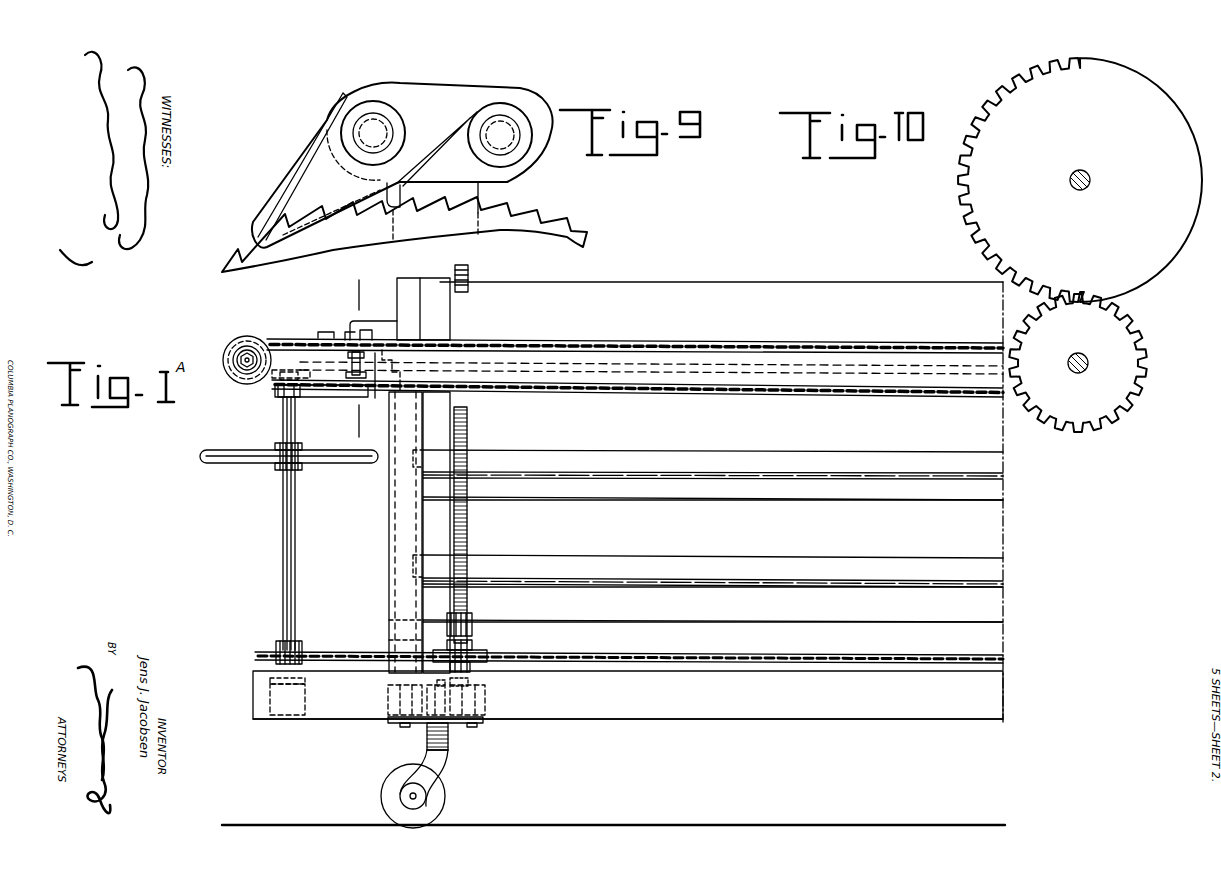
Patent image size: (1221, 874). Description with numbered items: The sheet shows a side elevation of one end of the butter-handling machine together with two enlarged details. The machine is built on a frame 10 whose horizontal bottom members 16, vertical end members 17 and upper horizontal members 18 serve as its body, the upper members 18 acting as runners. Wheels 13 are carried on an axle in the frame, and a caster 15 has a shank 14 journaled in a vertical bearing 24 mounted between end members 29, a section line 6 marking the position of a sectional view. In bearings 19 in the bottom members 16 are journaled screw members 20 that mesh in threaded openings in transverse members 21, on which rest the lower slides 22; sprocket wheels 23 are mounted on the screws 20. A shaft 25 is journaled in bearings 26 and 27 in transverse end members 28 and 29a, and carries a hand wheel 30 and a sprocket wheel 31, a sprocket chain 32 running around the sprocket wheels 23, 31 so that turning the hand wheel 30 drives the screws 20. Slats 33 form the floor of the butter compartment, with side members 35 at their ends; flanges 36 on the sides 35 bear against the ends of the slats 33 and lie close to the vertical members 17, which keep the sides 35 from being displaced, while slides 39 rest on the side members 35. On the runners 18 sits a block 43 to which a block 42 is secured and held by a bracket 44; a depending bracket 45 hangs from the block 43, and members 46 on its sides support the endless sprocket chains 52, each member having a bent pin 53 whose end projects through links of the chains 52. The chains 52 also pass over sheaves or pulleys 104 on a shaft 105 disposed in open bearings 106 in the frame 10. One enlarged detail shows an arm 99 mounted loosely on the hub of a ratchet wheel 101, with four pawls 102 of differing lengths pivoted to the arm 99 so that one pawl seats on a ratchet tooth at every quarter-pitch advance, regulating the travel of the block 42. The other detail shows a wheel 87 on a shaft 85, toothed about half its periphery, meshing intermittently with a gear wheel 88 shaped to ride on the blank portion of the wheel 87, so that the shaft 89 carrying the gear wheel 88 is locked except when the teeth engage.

In FIG. 1A, the section line 6— 6 is at (364, 359).
In FIG. 1A, the frame 10 is at (628, 733).
In FIG. 1A, the wheels 13 is at (649, 361).
In FIG. 1A, the shank 14 is at (440, 758).
In FIG. 1A, the caster 15 is at (428, 800).
In FIG. 1A, the horizontal bottom members 16 is at (628, 695).
In FIG. 1A, the vertical end members 17 is at (389, 540).
In FIG. 1A, the upper horizontal members 18 is at (291, 375).
In FIG. 1A, the bearings 19 is at (470, 686).
In FIG. 1A, the screw members 20 is at (463, 594).
In FIG. 1A, the transverse members 21 is at (470, 628).
In FIG. 1A, the lower slides 22 is at (713, 608).
In FIG. 1A, the sprocket wheels 23 is at (482, 653).
In FIG. 1A, the vertical bearing 24 is at (460, 727).
In FIG. 1A, the shaft 25 is at (293, 540).
In FIG. 1A, the bearing 26 is at (278, 395).
In FIG. 1A, the bearing 27 is at (270, 683).
In FIG. 1A, the transverse end member 28 is at (345, 398).
In FIG. 1A, the end members 29 is at (388, 704).
In FIG. 1A, the transverse end member 29a is at (287, 699).
In FIG. 1A, the hand wheel 30 is at (231, 464).
In FIG. 1A, the sprocket wheel 31 is at (278, 652).
In FIG. 1A, the sprocket chain 32 is at (341, 655).
In FIG. 1A, the slats 33 is at (817, 472).
In FIG. 1A, the side members 35 is at (637, 471).
In FIG. 1A, the flanges 36 is at (713, 573).
In FIG. 1A, the slides 39 is at (911, 500).
In FIG. 1A, the block 42 is at (406, 280).
In FIG. 1A, the block 43 is at (330, 334).
In FIG. 1A, the bracket 44 is at (378, 328).
In FIG. 1A, the depending bracket 45 is at (375, 398).
In FIG. 1A, the members 46 is at (350, 336).
In FIG. 1A, the endless sprocket chains 52 is at (288, 340).
In FIG. 1A, the bent pin 53 is at (352, 364).
In FIG. 10, the shaft 85 is at (1088, 175).
In FIG. 10, the wheel 87 is at (1080, 180).
In FIG. 10, the gear wheel 88 is at (1077, 363).
In FIG. 10, the shaft 89 is at (1078, 353).
In FIG. 9, the arm 99 is at (410, 93).
In FIG. 9, the ratchet wheel 101 is at (404, 234).
In FIG. 9, the pawls 102 is at (280, 176).
In FIG. 1A, the sheaves or pulleys 104 is at (236, 352).
In FIG. 1A, the shaft 105 is at (250, 353).
In FIG. 1A, the open bearings 106 is at (236, 377).